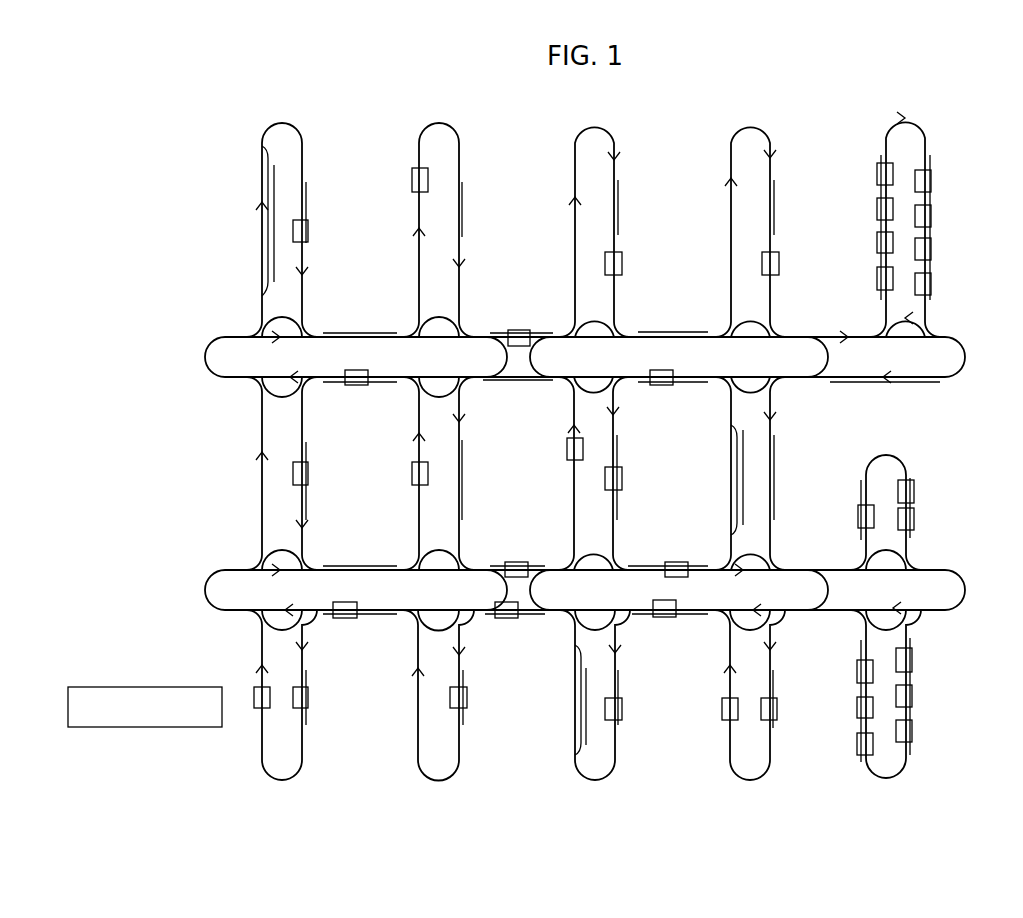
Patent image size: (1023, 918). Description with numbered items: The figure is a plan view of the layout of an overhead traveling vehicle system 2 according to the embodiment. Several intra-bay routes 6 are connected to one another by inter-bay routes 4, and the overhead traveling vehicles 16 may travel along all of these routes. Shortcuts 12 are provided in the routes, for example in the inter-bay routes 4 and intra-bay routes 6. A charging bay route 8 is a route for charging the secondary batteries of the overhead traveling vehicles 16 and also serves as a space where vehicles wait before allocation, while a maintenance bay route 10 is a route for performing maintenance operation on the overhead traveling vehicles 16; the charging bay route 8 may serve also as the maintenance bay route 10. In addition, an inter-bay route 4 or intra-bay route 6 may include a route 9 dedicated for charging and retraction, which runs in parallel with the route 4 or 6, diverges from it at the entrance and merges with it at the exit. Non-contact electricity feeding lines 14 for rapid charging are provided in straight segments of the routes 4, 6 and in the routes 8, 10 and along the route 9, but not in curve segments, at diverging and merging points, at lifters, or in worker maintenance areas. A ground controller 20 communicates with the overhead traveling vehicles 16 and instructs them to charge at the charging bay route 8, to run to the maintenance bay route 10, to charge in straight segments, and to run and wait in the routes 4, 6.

The overhead traveling vehicle system 2 is at (510, 793).
The inter-bay route 4 is at (965, 355).
The intra-bay route 6 is at (262, 262).
The charging bay route 8 is at (925, 126).
The route dedicated for charging and retraction 9 is at (268, 152).
The maintenance bay route 10 is at (906, 462).
The shortcut 12 is at (495, 357).
The non-contact electricity feeding line 14 is at (275, 200).
The overhead traveling vehicle 16 is at (312, 228).
The ground controller 20 is at (137, 728).